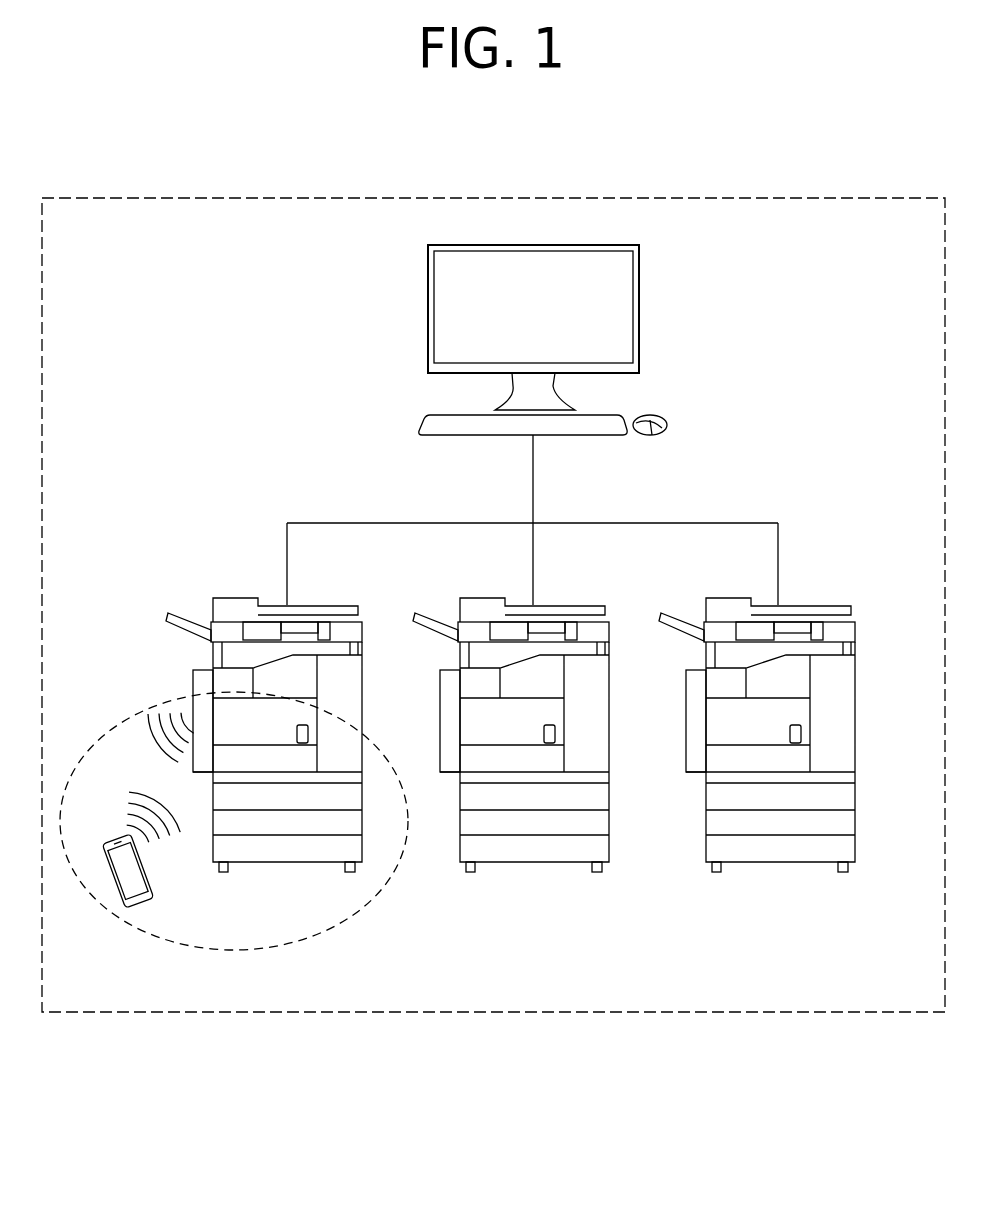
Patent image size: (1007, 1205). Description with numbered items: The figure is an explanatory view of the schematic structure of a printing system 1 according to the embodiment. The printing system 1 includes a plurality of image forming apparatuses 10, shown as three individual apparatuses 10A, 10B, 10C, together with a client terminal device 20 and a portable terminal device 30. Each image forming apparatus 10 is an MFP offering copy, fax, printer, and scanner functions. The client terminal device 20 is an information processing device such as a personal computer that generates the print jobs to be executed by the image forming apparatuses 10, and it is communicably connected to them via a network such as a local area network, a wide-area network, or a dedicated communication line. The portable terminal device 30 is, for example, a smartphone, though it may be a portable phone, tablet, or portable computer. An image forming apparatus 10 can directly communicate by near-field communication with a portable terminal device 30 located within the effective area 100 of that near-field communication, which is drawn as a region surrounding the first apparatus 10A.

The printing system 1 is at (742, 197).
The client terminal device 20 is at (643, 270).
The image forming apparatus 10 is at (537, 700).
The image forming apparatus 10A is at (303, 601).
The image forming apparatus 10B is at (548, 601).
The image forming apparatus 10C is at (793, 601).
The portable terminal device 30 is at (152, 878).
The effective area 100 is at (343, 928).